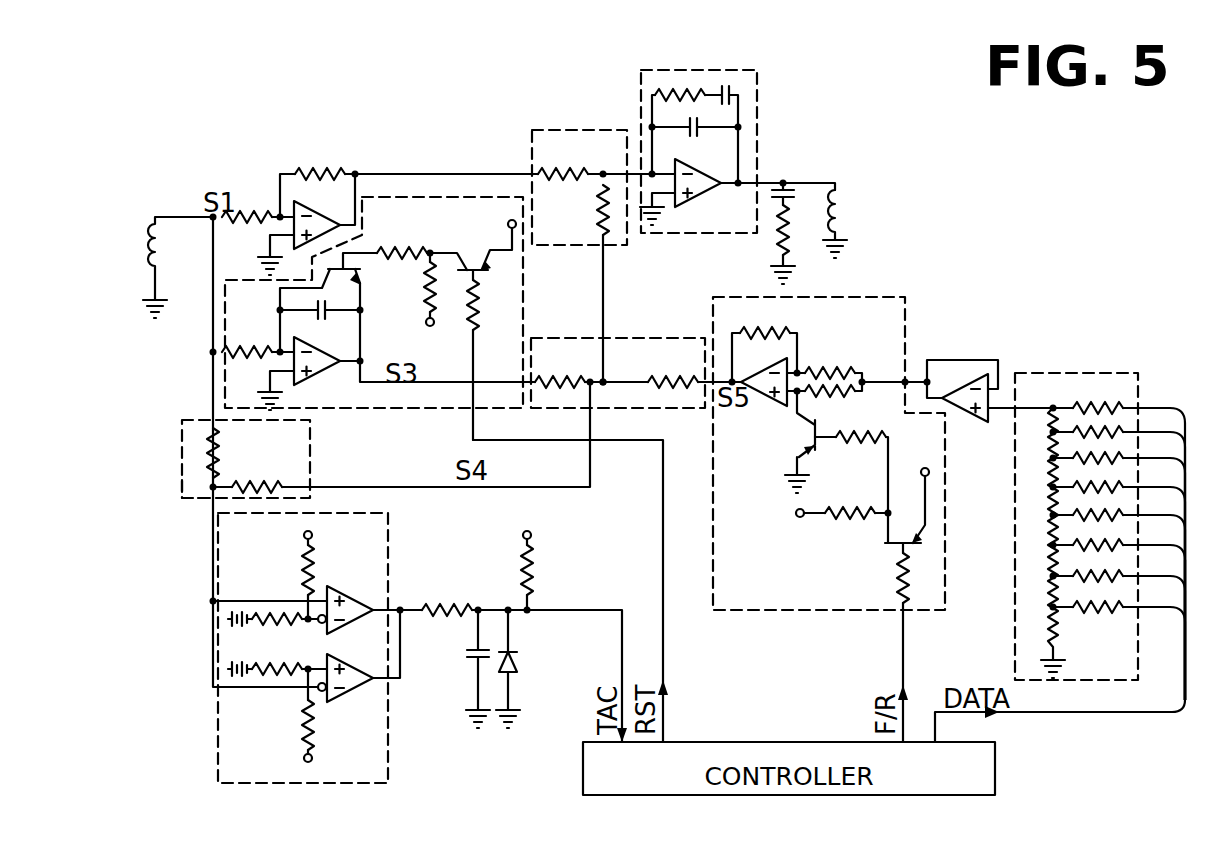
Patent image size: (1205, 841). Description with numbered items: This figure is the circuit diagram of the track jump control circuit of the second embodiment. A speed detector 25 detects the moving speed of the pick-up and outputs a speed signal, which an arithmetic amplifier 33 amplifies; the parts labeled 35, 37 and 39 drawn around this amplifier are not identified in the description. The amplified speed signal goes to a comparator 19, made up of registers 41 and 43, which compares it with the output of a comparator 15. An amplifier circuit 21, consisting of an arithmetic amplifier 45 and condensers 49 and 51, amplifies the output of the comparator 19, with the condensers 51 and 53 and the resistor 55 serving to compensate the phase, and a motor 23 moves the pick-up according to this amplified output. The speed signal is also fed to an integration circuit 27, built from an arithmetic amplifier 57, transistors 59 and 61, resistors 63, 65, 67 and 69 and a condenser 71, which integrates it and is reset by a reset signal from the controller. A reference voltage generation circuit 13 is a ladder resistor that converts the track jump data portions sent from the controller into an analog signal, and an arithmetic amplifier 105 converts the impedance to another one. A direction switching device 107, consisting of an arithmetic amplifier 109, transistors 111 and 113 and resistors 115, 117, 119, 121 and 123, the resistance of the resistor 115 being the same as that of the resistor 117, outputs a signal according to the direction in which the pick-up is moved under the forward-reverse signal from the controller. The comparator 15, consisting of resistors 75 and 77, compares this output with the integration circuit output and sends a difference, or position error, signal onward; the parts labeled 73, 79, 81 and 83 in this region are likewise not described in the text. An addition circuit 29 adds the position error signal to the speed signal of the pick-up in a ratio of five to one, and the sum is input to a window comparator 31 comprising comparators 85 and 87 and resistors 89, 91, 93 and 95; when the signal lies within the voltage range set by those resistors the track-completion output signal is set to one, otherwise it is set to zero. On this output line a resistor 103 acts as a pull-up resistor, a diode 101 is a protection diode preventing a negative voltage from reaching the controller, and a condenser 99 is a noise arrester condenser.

The reference voltage generation circuit 13 is at (1060, 372).
The comparator 15 is at (618, 338).
The comparator 19 is at (588, 128).
The amplifier circuit 21 is at (760, 122).
The motor 23 is at (842, 205).
The speed detector 25 is at (148, 240).
The integration circuit 27 is at (203, 338).
The addition circuit 29 is at (185, 420).
The window comparator 31 is at (390, 562).
The arithmetic amplifier 33 is at (315, 215).
The input resistor 35 is at (252, 212).
The feedback resistor 37 is at (325, 172).
The junction 39 is at (605, 172).
The register 41 is at (565, 172).
The register 43 is at (598, 210).
The arithmetic amplifier 45 is at (697, 200).
The condenser 49 is at (738, 92).
The condenser 51 is at (700, 132).
The condenser 53 is at (793, 200).
The resistor 55 is at (792, 255).
The arithmetic amplifier 57 is at (320, 374).
The transistor 59 is at (360, 266).
The transistor 61 is at (465, 274).
The resistor 63 is at (255, 350).
The resistor 65 is at (400, 252).
The resistor 67 is at (425, 292).
The resistor 69 is at (480, 310).
The condenser 71 is at (342, 362).
The junction 73 is at (605, 382).
The resistor 75 is at (565, 380).
The resistor 77 is at (672, 382).
The divider output node 79 is at (182, 498).
The resistor 81 is at (205, 450).
The resistor 83 is at (250, 485).
The comparator 85 is at (345, 595).
The comparator 87 is at (365, 630).
The resistor 89 is at (325, 580).
The resistor 91 is at (278, 612).
The resistor 93 is at (275, 680).
The resistor 95 is at (300, 728).
The condenser 99 is at (470, 660).
The diode 101 is at (515, 660).
The resistor 103 is at (535, 568).
The arithmetic amplifier 105 is at (965, 420).
The direction switching device 107 is at (806, 612).
The arithmetic amplifier 109 is at (775, 405).
The transistor 111 is at (800, 452).
The transistor 113 is at (890, 560).
The resistor 115 is at (775, 330).
The resistor 117 is at (830, 368).
The resistor 119 is at (830, 393).
The resistor 121 is at (850, 445).
The resistor 123 is at (845, 525).